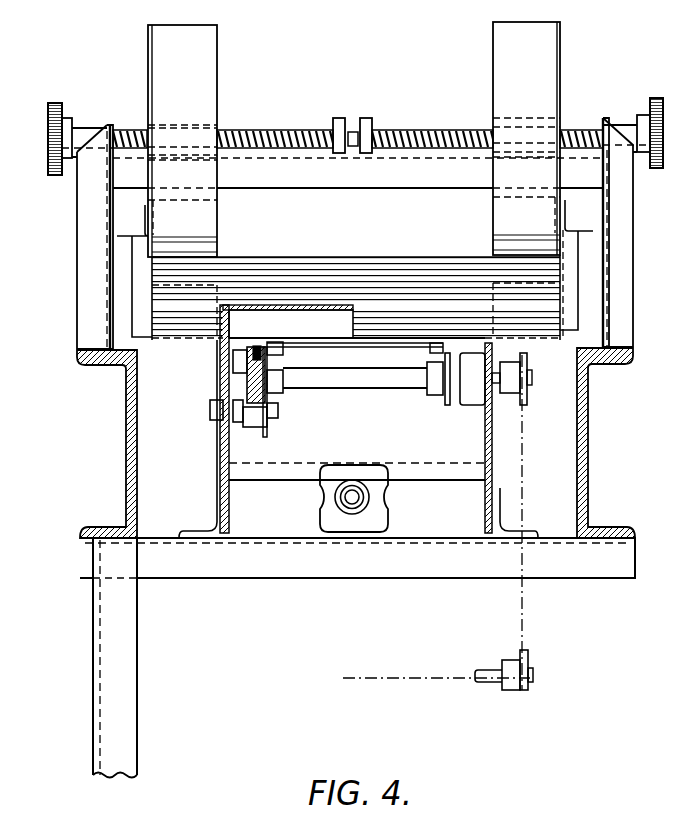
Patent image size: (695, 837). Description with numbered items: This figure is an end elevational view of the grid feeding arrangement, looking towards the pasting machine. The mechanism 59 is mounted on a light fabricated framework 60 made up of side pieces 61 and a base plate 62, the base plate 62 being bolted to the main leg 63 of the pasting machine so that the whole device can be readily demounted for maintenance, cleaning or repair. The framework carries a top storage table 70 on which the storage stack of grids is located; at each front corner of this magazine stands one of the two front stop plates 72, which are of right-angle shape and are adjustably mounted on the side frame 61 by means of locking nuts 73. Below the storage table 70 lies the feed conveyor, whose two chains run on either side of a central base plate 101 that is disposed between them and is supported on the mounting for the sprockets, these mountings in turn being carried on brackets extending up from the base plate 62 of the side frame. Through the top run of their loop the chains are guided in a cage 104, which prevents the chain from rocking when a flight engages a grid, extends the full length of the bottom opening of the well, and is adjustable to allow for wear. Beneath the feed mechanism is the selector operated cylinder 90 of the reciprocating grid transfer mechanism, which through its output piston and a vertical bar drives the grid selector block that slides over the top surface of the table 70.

The mechanism 59 is at (78, 240).
The framework 60 is at (323, 658).
The side pieces 61 is at (126, 408).
The base plate 62 is at (193, 557).
The main leg 63 is at (125, 693).
The top storage table 70 is at (306, 312).
The front stop plates 72 is at (197, 58).
The locking nuts 73 is at (50, 163).
The selector operated cylinder 90 is at (327, 488).
The central base plate 101 is at (382, 343).
The cage 104 is at (237, 343).